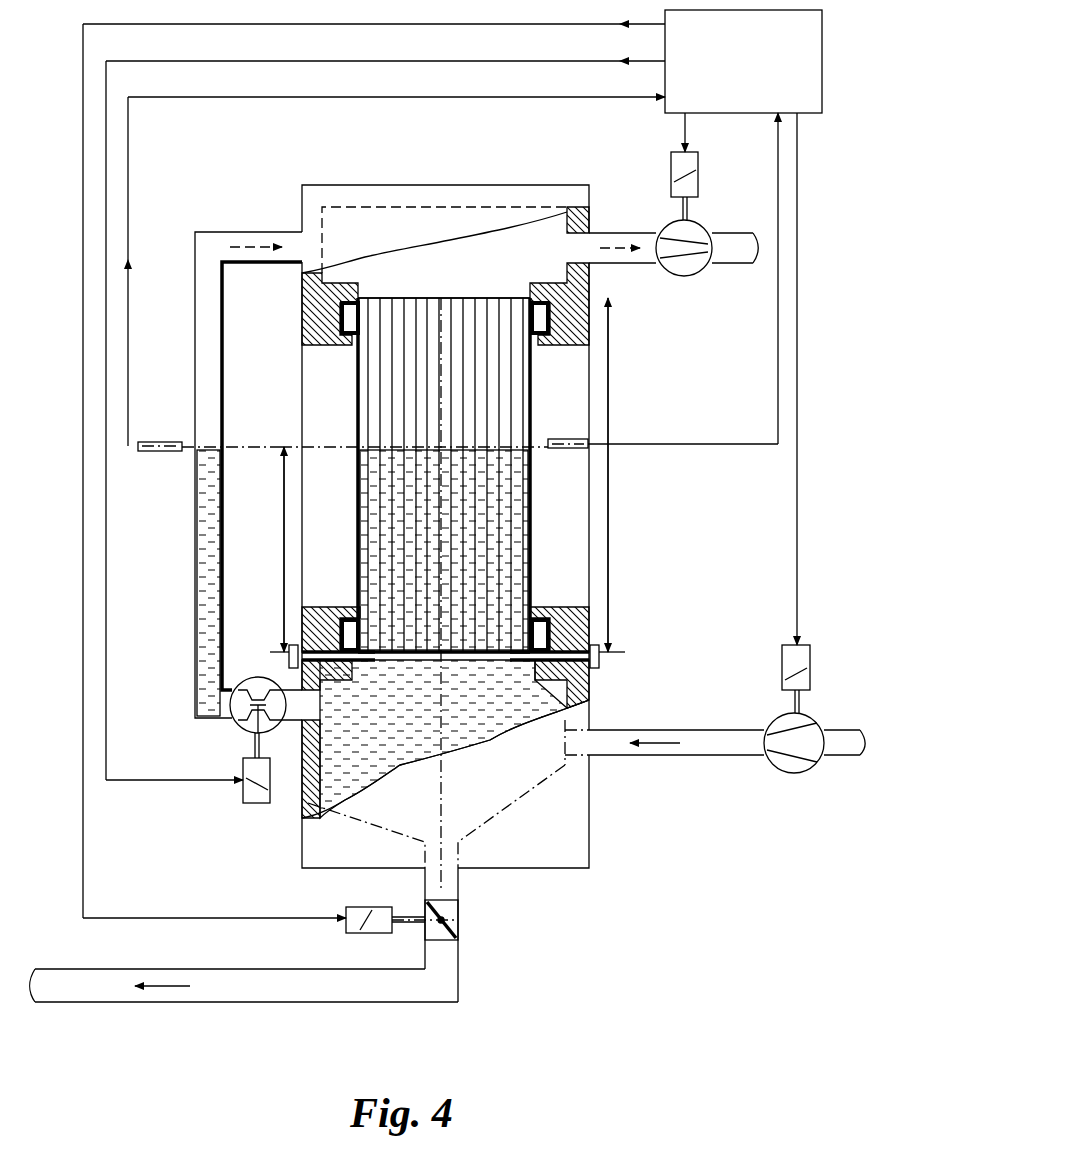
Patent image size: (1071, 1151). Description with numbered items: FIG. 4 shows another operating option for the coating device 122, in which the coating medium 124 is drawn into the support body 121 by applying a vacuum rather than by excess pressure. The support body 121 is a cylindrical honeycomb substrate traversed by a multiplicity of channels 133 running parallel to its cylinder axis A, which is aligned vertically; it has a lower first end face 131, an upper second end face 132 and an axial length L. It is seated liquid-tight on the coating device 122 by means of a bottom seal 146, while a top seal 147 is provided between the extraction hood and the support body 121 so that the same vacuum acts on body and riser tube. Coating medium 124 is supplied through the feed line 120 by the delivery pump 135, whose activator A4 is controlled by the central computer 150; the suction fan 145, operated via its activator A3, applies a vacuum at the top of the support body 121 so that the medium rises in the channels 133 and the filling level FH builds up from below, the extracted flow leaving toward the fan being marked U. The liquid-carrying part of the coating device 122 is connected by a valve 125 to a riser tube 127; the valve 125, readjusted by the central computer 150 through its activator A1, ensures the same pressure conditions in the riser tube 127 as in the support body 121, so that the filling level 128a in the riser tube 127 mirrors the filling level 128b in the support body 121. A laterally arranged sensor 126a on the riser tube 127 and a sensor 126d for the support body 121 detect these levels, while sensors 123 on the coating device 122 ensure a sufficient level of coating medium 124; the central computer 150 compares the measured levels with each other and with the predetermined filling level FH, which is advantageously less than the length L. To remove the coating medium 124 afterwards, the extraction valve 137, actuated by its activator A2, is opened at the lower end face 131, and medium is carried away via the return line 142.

The central computer 150 is at (762, 75).
The coating device 122 is at (589, 870).
The coating medium 124 is at (480, 722).
The support body 121 is at (501, 298).
The channels 133 is at (450, 302).
The second end face 132 is at (404, 292).
The first end face 131 is at (416, 655).
The top seal 147 is at (548, 318).
The bottom seal 146 is at (548, 632).
The cylinder axis A is at (441, 298).
The riser tube 127 is at (195, 333).
The filling level in the riser tube 128a is at (240, 445).
The filling level in the support body 128b is at (336, 445).
The sensor for liquid level in the riser tube 126a is at (160, 452).
The sensor for liquid level in the support body 126d is at (568, 438).
The sensors for the level in the coating device 123 is at (285, 652).
The filling level FH is at (286, 545).
The axial length of the support body L is at (610, 474).
The valve at the riser tube inlet 125 is at (237, 720).
The activator for the valve A1 is at (250, 785).
The extraction valve 137 is at (462, 928).
The activator for the extraction valve A2 is at (350, 925).
The return line 142 is at (246, 985).
The outlet flow U is at (600, 250).
The suction fan 145 is at (688, 272).
The activator for the suction fan A3 is at (697, 178).
The feed line 120 is at (712, 740).
The delivery pump 135 is at (785, 768).
The activator for the delivery pump A4 is at (786, 656).